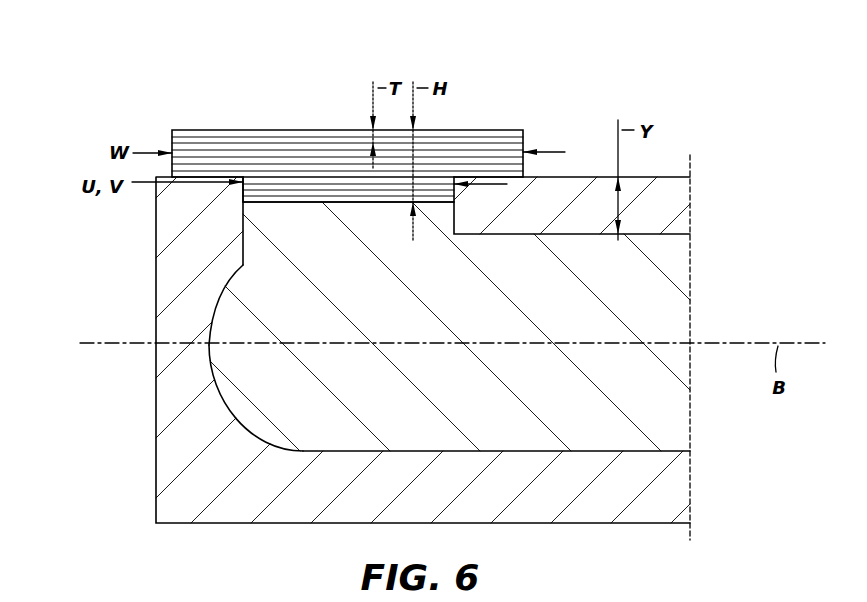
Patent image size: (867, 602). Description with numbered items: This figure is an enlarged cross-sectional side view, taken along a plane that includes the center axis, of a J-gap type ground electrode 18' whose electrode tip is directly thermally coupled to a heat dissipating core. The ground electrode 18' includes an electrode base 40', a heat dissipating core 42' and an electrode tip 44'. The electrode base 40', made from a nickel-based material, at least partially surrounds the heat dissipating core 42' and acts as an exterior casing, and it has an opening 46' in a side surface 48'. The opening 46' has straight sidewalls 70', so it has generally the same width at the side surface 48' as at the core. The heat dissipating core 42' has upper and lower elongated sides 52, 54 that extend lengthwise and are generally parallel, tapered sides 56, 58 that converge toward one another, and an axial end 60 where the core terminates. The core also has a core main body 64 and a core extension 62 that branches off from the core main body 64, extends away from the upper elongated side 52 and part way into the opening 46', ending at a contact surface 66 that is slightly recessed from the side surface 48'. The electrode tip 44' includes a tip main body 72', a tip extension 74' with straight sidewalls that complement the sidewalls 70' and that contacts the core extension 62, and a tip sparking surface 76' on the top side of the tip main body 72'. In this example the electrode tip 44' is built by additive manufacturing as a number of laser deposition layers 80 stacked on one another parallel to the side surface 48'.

The ground electrode 18' is at (386, 286).
The electrode base 40' is at (453, 347).
The heat dissipating core 42' is at (478, 326).
The electrode tip 44' is at (355, 116).
The opening 46' is at (188, 144).
The side surface 48' is at (510, 152).
The upper elongated side 52 is at (527, 233).
The lower elongated side 54 is at (598, 453).
The tapered side 56 is at (232, 276).
The tapered side 58 is at (243, 424).
The axial end 60 is at (210, 352).
The core extension 62 is at (313, 208).
The core main body 64 is at (300, 313).
The contact surface 66 is at (340, 200).
The straight sidewalls 70' is at (348, 223).
The tip main body 72' is at (347, 92).
The tip extension 74' is at (368, 118).
The tip sparking surface 76' is at (488, 121).
The laser deposition layers 80 is at (297, 130).